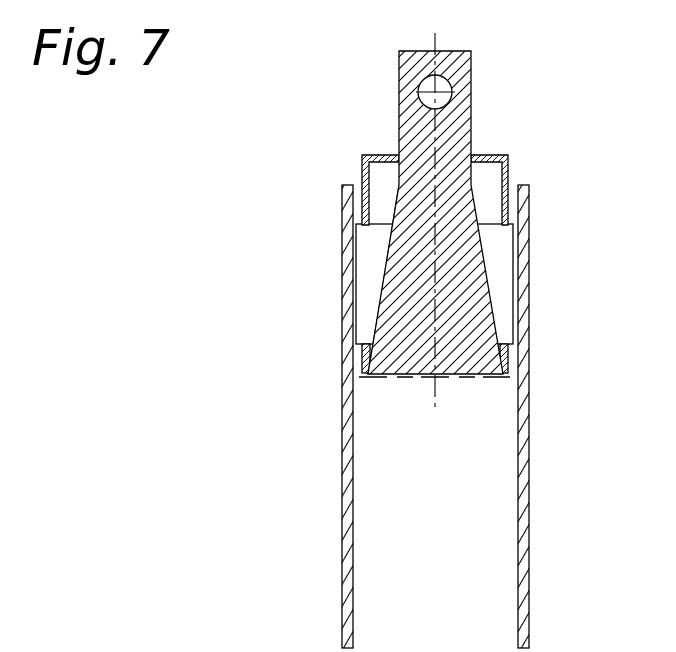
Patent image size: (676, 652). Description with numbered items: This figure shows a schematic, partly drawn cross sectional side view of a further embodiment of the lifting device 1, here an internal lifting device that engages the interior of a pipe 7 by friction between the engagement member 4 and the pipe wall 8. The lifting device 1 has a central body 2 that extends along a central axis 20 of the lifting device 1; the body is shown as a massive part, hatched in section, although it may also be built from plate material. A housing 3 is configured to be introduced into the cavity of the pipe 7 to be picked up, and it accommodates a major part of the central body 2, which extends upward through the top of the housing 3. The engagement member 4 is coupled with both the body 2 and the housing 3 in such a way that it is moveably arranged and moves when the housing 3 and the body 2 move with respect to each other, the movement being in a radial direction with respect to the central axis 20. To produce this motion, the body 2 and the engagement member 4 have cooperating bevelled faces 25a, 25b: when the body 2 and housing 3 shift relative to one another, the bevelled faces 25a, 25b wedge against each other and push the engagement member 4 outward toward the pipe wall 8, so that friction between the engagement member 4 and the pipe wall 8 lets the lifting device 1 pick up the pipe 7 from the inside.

The lifting device 1 is at (421, 210).
The central body 2 is at (462, 300).
The housing 3 is at (508, 163).
The engagement member 4 is at (373, 243).
The pipe 7 is at (494, 416).
The pipe wall 8 is at (520, 554).
The central axis 20 is at (435, 42).
The bevelled face 25a is at (396, 268).
The bevelled face 25b is at (373, 303).